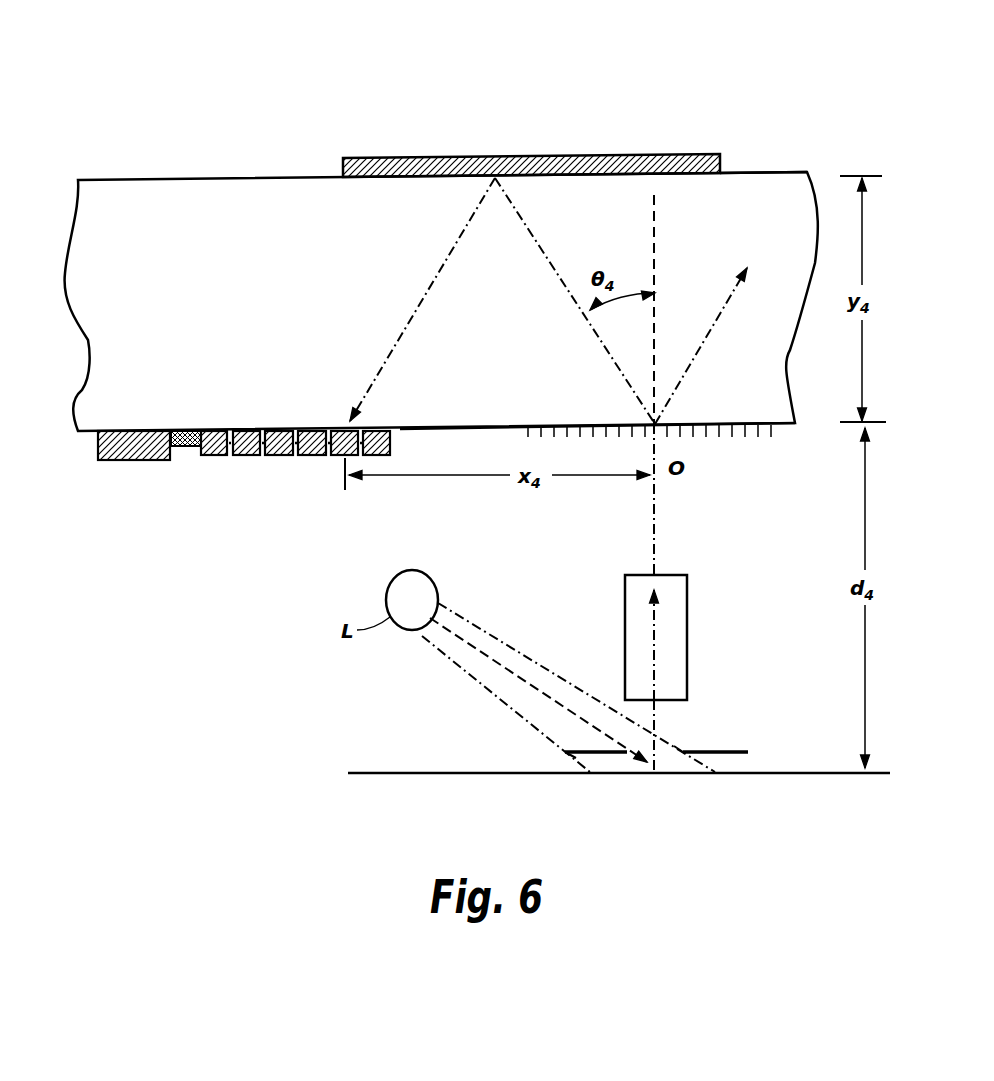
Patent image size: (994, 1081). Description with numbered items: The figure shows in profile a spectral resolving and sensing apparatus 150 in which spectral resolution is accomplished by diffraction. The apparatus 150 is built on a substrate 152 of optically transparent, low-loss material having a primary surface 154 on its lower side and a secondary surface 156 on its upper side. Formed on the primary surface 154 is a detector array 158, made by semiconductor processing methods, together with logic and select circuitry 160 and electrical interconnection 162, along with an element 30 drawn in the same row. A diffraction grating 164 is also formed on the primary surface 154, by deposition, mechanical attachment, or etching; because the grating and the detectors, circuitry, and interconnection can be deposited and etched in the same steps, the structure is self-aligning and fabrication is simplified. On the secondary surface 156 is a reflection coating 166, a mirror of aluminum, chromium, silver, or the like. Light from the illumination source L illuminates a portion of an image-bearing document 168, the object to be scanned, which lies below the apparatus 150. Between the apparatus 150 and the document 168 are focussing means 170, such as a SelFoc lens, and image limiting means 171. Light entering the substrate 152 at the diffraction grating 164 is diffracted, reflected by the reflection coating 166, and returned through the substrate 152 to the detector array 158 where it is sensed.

The spectral resolving and sensing apparatus 150 is at (143, 70).
The substrate 152 is at (178, 195).
The primary surface 154 is at (790, 426).
The secondary surface 156 is at (767, 168).
The detector array 158 is at (380, 492).
The logic and select circuitry 160 is at (105, 462).
The electrical interconnection 162 is at (183, 450).
The electrode element 30 is at (212, 458).
The diffraction grating 164 is at (736, 437).
The reflection coating 166 is at (400, 157).
The image-bearing document 168 is at (410, 772).
The focussing means 170 is at (687, 655).
The image limiting means 171 is at (715, 750).